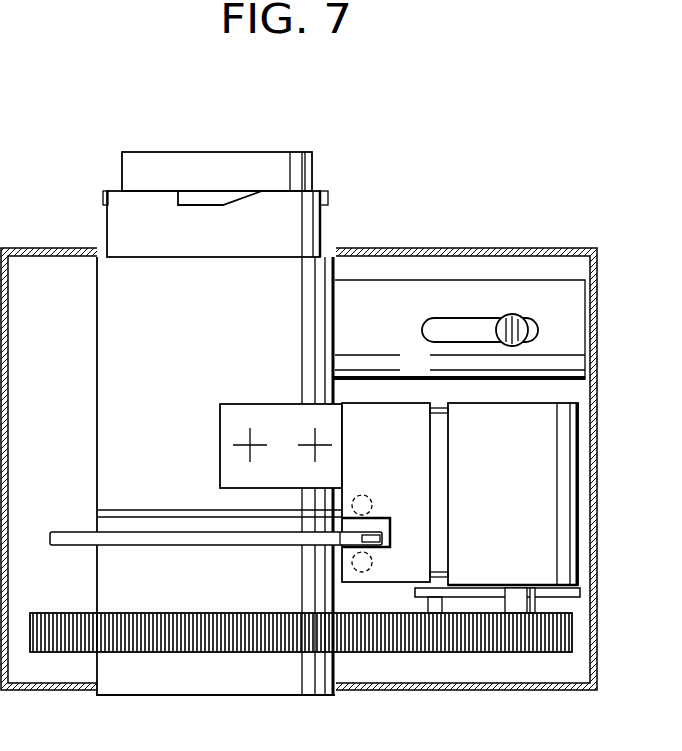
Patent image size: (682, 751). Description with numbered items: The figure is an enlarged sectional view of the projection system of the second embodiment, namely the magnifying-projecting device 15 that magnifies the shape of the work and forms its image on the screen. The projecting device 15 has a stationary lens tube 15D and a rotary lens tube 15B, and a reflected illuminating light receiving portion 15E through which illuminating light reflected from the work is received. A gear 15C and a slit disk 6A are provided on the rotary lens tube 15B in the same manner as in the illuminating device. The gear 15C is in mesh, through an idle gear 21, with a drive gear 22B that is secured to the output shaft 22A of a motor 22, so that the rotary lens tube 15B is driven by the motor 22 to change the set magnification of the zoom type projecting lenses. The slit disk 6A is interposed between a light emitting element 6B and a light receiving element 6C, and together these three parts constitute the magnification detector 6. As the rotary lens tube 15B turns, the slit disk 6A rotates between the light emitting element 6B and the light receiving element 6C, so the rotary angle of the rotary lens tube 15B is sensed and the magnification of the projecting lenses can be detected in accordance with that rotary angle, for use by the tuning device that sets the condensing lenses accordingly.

The projecting device 15 is at (337, 223).
The stationary lens tube 15D is at (300, 277).
The reflected illuminating light receiving portion 15E is at (430, 287).
The rotary lens tube 15B is at (288, 684).
The gear 15C is at (162, 654).
The magnification detector 6 is at (402, 400).
The slit disk 6A is at (58, 530).
The light emitting element 6B is at (362, 495).
The light receiving element 6C is at (360, 573).
The motor 22 is at (572, 538).
The output shaft 22A is at (530, 607).
The drive gear 22B is at (505, 652).
The idle gear 21 is at (424, 652).